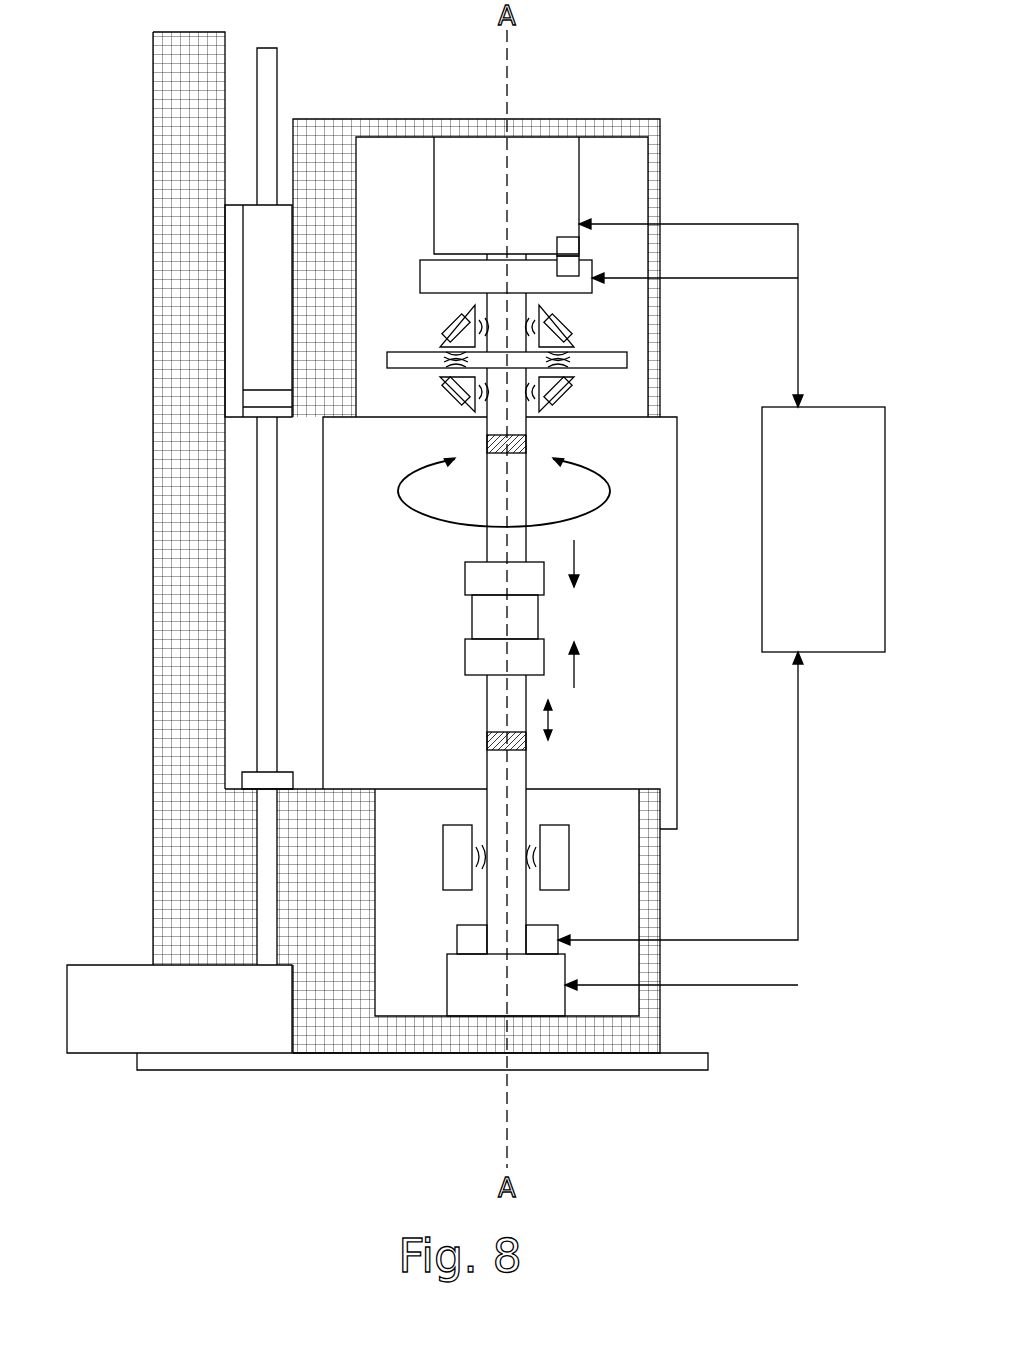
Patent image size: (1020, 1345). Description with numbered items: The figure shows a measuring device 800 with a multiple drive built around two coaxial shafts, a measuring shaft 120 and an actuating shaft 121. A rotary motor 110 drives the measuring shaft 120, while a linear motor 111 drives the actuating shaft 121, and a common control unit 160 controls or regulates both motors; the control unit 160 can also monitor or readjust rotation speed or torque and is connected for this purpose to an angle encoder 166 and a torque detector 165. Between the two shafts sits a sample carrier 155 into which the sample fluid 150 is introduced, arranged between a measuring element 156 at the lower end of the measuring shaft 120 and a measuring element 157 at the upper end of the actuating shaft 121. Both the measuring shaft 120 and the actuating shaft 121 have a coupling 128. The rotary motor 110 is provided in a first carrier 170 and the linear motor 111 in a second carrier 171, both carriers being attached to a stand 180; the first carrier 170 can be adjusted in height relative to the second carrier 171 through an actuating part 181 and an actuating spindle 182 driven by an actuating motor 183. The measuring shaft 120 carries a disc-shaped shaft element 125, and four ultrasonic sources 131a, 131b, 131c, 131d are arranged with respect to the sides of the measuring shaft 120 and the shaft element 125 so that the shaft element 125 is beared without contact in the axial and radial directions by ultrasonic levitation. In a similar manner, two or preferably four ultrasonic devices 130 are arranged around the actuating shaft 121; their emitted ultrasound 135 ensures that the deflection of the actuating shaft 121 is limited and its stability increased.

The rotary motor 110 is at (545, 150).
The linear motor 111 is at (538, 990).
The measuring shaft 120 is at (493, 477).
The actuating shaft 121 is at (497, 697).
The shaft element 125 is at (630, 360).
The coupling 128 is at (520, 440).
The ultrasonic devices 130 is at (625, 343).
The ultrasonic source 131a is at (431, 325).
The ultrasonic source 131b is at (583, 326).
The ultrasonic source 131c is at (435, 388).
The ultrasonic source 131d is at (574, 401).
The emitted ultrasound 135 is at (433, 340).
The sample fluid 150 is at (514, 640).
The sample carrier 155 is at (485, 612).
The measuring element 156 is at (485, 568).
The measuring element 157 is at (480, 652).
The control unit 160 is at (721, 604).
The torque detector 165 is at (572, 248).
The angle encoder 166 is at (572, 268).
The first carrier 170 is at (328, 158).
The second carrier 171 is at (348, 1030).
The stand 180 is at (122, 609).
The actuating part 181 is at (272, 358).
The actuating spindle 182 is at (265, 548).
The actuating motor 183 is at (200, 1030).
The measuring device 800 is at (834, 818).